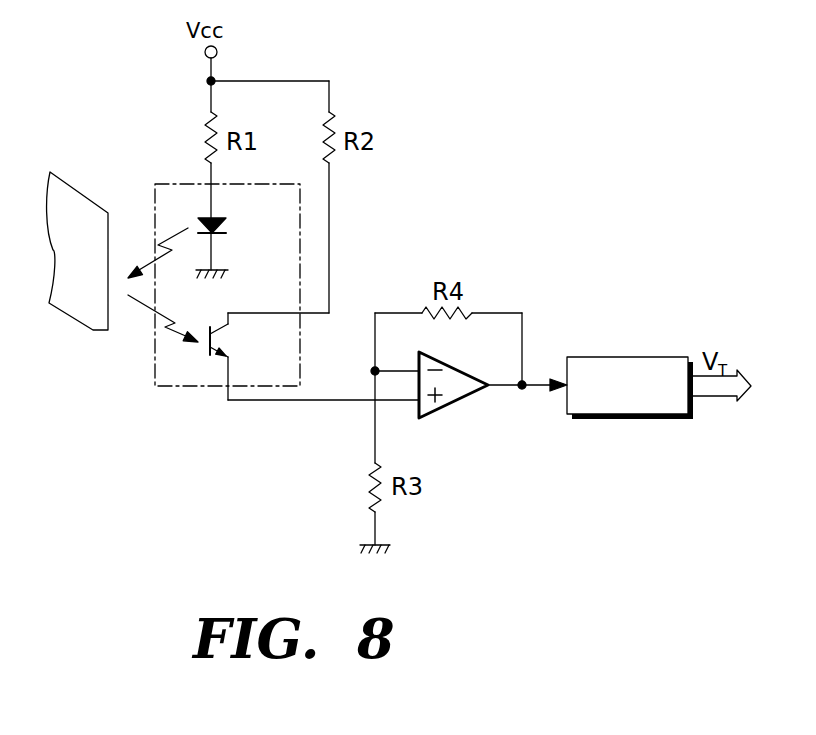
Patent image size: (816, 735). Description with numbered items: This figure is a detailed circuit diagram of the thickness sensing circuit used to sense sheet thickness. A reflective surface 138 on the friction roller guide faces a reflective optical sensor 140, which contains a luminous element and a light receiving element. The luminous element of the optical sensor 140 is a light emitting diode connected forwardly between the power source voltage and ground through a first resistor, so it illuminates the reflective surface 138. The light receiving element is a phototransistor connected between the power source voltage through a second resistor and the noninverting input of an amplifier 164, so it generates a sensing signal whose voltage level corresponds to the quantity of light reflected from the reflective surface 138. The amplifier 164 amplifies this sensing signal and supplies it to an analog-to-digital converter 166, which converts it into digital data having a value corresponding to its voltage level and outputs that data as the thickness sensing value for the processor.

The reflective surface 138 is at (75, 186).
The reflective optical sensor 140 is at (184, 388).
The amplifier 164 is at (455, 400).
The analog-to-digital converter 166 is at (624, 357).